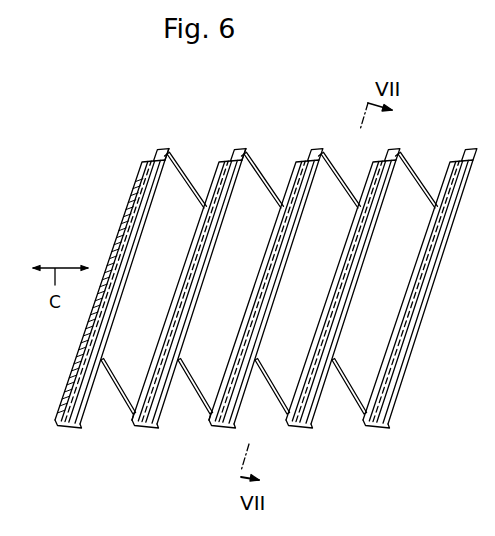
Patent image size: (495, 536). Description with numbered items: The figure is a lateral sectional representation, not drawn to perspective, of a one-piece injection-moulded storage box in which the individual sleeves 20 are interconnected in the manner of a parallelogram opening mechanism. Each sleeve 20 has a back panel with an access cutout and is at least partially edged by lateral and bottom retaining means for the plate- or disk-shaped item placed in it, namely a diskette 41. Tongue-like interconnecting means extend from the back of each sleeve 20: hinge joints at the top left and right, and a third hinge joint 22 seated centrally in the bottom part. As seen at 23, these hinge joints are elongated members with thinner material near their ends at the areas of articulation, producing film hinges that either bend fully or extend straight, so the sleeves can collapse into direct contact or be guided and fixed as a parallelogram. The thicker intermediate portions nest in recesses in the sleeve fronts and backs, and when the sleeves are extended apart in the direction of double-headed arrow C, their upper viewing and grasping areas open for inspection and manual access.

The sleeve 20 is at (78, 357).
The third hinge joint 22 is at (115, 387).
The film hinge 23 is at (169, 155).
The diskette 41 is at (244, 148).